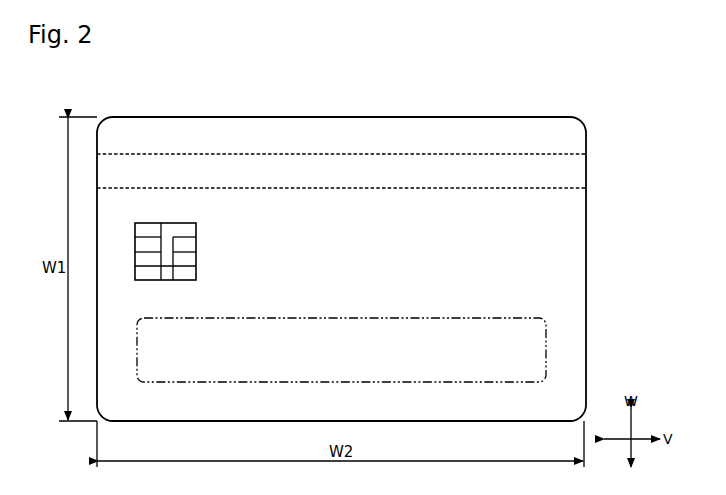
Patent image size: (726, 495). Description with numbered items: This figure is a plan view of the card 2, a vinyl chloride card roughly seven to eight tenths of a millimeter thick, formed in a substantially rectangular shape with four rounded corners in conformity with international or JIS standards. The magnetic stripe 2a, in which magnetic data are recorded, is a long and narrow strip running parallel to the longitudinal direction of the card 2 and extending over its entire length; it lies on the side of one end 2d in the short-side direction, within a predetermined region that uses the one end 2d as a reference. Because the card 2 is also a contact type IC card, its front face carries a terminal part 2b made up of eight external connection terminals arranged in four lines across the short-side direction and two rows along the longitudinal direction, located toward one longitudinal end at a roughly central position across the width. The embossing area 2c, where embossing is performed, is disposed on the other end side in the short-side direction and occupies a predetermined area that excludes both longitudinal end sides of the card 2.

The card 2 is at (603, 91).
The magnetic stripe 2a is at (228, 153).
The terminal part 2b is at (196, 244).
The embossing area 2c is at (457, 318).
The one end 2d is at (355, 117).